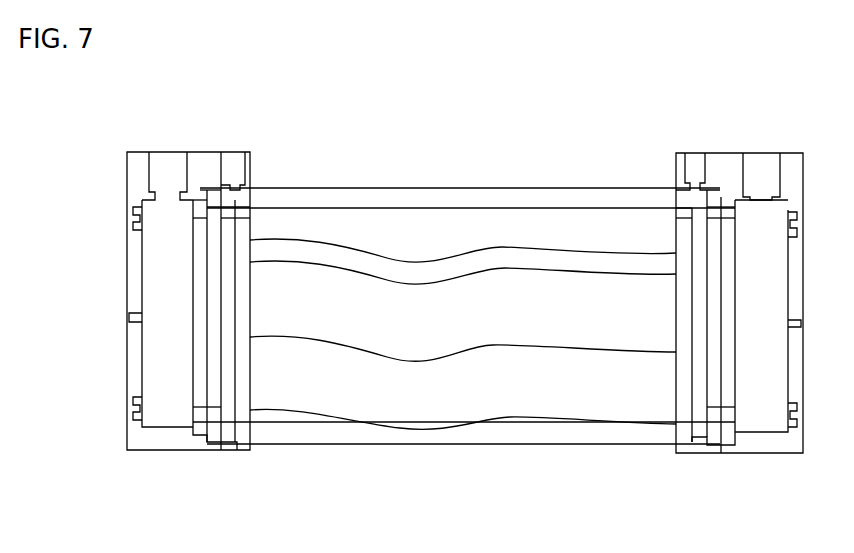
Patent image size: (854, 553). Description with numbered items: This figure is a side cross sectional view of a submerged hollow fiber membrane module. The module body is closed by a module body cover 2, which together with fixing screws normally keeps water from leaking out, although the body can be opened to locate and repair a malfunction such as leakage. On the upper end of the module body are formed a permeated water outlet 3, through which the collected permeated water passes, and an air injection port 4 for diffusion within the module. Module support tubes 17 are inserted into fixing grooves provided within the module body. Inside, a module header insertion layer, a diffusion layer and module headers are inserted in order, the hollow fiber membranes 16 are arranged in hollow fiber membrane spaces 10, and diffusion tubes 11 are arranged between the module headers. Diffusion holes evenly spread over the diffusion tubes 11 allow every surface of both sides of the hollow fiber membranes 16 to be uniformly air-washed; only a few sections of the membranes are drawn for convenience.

The module body cover 2 is at (135, 353).
The permeated water outlet 3 is at (172, 157).
The air injection port 4 is at (236, 157).
The hollow fiber membrane spaces 10 is at (200, 378).
The diffusion tubes 11 is at (233, 315).
The hollow fiber membranes 16 is at (448, 252).
The module support tubes 17 is at (314, 188).